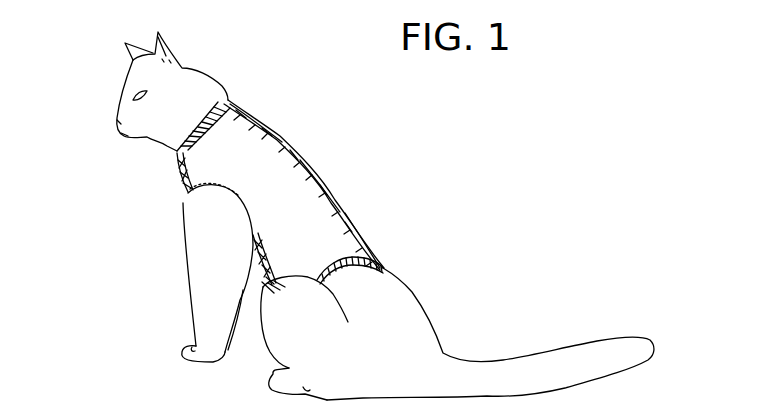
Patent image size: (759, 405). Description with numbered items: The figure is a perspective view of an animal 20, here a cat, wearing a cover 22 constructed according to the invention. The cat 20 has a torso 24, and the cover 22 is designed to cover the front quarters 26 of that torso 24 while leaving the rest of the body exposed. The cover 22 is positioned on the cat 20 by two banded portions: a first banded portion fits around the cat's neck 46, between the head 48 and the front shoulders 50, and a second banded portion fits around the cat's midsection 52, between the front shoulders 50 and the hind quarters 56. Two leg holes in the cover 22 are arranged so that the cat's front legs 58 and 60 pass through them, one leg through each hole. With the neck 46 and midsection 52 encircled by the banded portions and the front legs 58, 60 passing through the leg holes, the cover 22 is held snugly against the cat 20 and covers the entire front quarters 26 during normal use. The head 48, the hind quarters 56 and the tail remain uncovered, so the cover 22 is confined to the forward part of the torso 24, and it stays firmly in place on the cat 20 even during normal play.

The animal 20 is at (349, 114).
The cover 22 is at (287, 123).
The torso 24 is at (341, 181).
The front quarters 26 is at (160, 192).
The neck 46 is at (240, 93).
The head 48 is at (120, 74).
The front shoulders 50 is at (165, 214).
The midsection 52 is at (376, 224).
The hind quarters 56 is at (424, 278).
The front leg 58 is at (207, 291).
The front leg 60 is at (242, 320).